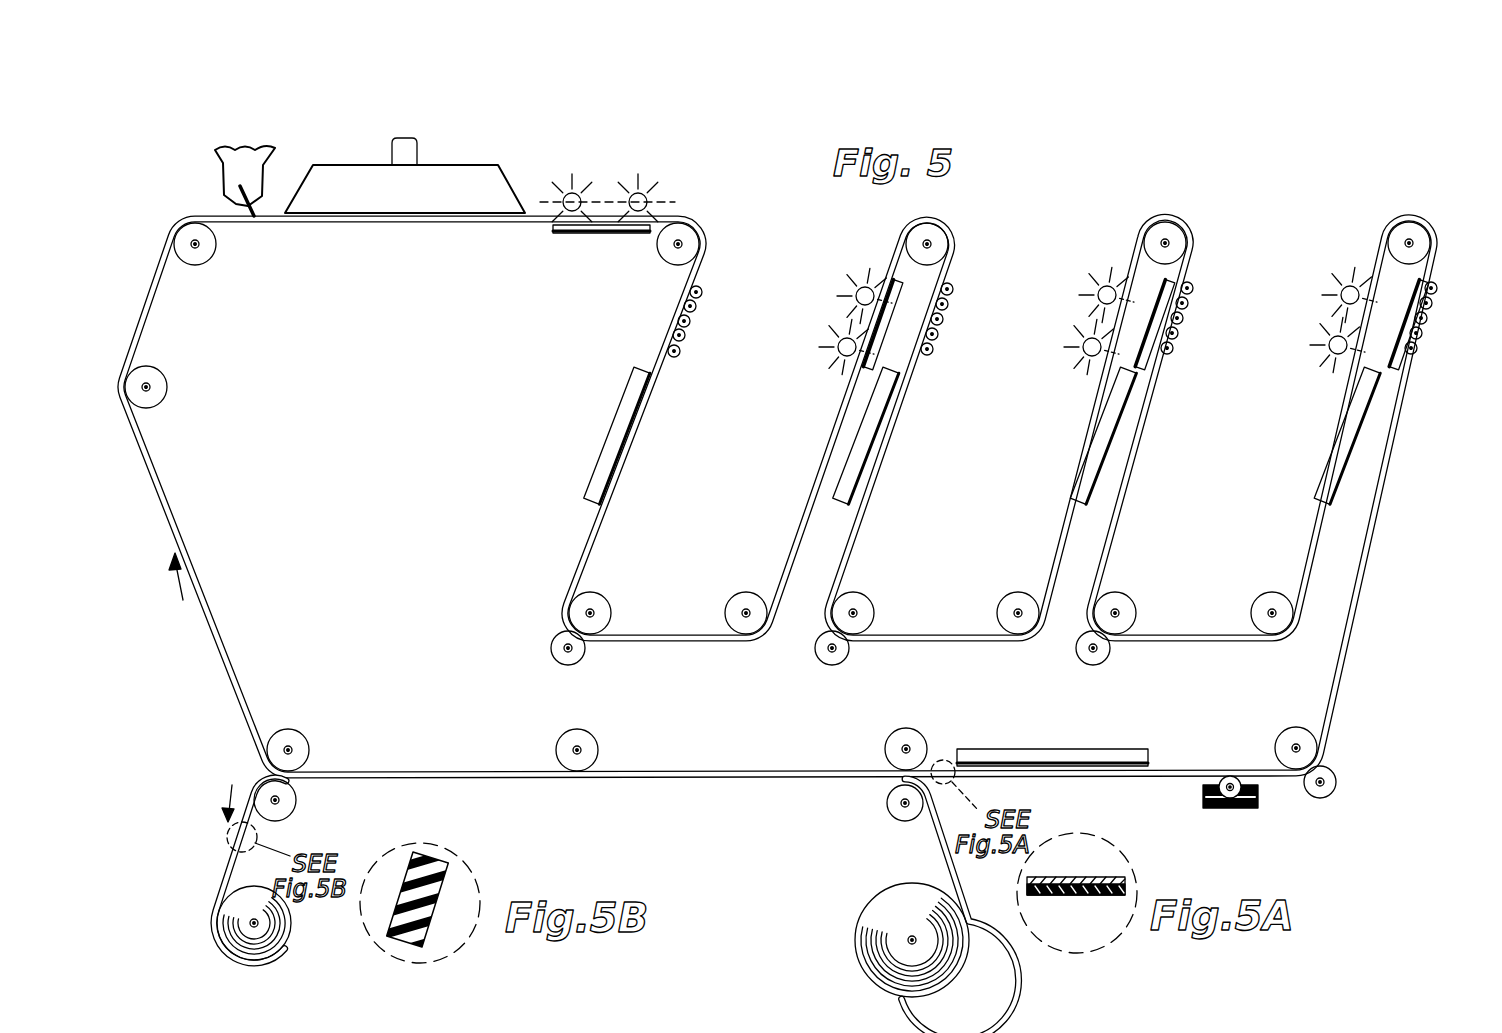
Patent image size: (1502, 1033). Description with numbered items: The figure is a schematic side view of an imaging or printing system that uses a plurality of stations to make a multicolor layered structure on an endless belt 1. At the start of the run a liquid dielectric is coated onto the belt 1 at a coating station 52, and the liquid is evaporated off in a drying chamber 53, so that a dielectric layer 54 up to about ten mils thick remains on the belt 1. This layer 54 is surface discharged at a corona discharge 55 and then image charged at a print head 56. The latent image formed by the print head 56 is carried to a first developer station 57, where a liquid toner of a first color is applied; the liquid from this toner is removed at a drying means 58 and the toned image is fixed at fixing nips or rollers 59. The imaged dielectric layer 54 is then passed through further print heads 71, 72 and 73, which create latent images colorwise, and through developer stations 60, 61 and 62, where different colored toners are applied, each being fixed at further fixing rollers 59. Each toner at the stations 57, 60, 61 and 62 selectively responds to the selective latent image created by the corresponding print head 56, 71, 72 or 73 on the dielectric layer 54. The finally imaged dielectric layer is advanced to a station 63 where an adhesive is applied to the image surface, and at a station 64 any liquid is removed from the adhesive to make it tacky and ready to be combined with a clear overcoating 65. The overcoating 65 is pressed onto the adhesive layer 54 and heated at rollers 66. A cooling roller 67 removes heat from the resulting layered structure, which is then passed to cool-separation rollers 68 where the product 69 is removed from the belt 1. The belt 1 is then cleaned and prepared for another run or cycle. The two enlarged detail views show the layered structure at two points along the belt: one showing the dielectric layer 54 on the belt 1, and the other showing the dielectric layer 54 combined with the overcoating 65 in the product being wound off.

In FIG. 5, the endless belt 1 is at (343, 225).
In FIG. 5A, the endless belt 1 is at (1070, 877).
In FIG. 5, the coating station 52 is at (214, 164).
In FIG. 5, the drying chamber 53 is at (367, 177).
In FIG. 5, the dielectric layer 54 is at (513, 219).
In FIG. 5B, the dielectric layer 54 is at (395, 915).
In FIG. 5A, the dielectric layer 54 is at (1063, 896).
In FIG. 5, the corona discharge 55 is at (580, 190).
In FIG. 5, the print head 56 is at (645, 190).
In FIG. 5, the first developer station 57 is at (703, 290).
In FIG. 5, the drying means 58 is at (636, 410).
In FIG. 5, the fixing rollers 59 is at (560, 650).
In FIG. 5, the developer station 60 is at (957, 290).
In FIG. 5, the developer station 61 is at (1197, 289).
In FIG. 5, the developer station 62 is at (1440, 289).
In FIG. 5, the adhesive station 63 is at (1218, 810).
In FIG. 5, the adhesive drying station 64 is at (1052, 740).
In FIG. 5, the clear overcoating 65 is at (945, 855).
In FIG. 5B, the clear overcoating 65 is at (430, 905).
In FIG. 5, the heated rollers 66 is at (885, 749).
In FIG. 5, the cooling roller 67 is at (592, 750).
In FIG. 5, the cool-separation rollers 68 is at (305, 750).
In FIG. 5, the product 69 is at (235, 883).
In FIG. 5, the print head 71 is at (858, 288).
In FIG. 5, the print head 72 is at (1100, 287).
In FIG. 5, the print head 73 is at (1343, 287).